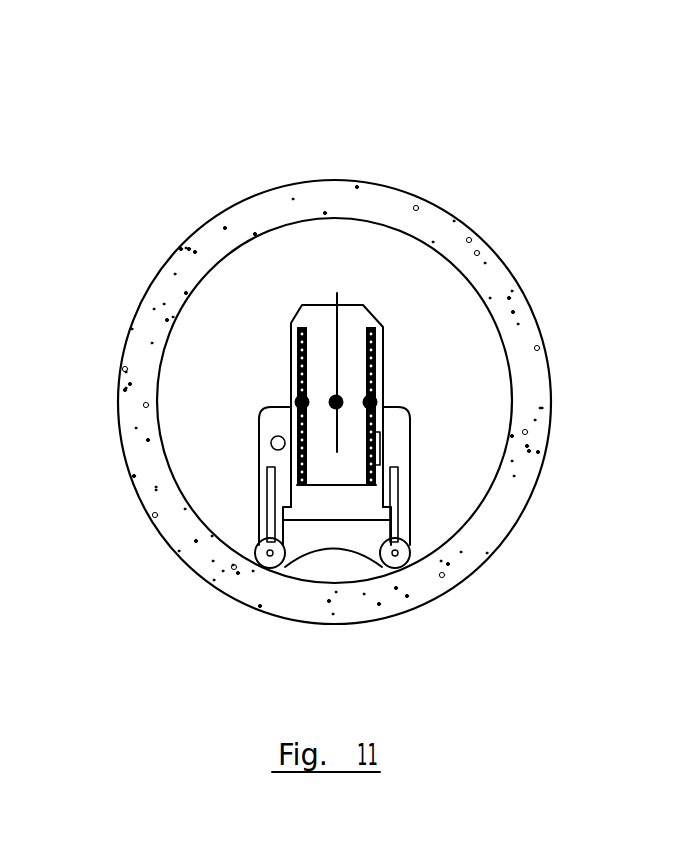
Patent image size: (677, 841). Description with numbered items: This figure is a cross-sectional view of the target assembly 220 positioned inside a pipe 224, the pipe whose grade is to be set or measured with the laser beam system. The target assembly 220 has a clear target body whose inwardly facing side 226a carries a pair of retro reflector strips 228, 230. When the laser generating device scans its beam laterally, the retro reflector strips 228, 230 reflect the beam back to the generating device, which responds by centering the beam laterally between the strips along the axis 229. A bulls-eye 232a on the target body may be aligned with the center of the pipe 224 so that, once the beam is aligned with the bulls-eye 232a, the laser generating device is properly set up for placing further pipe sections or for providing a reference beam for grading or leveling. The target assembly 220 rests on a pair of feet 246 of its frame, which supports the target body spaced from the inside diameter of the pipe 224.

The pipe 224 is at (487, 242).
The inwardly facing side 226a is at (355, 326).
The retro reflector strip 228 is at (302, 367).
The axis 229 is at (338, 293).
The retro reflector strip 230 is at (376, 366).
The bulls-eye 232a is at (336, 400).
The target assembly 220 is at (415, 456).
The feet 246 is at (258, 549).